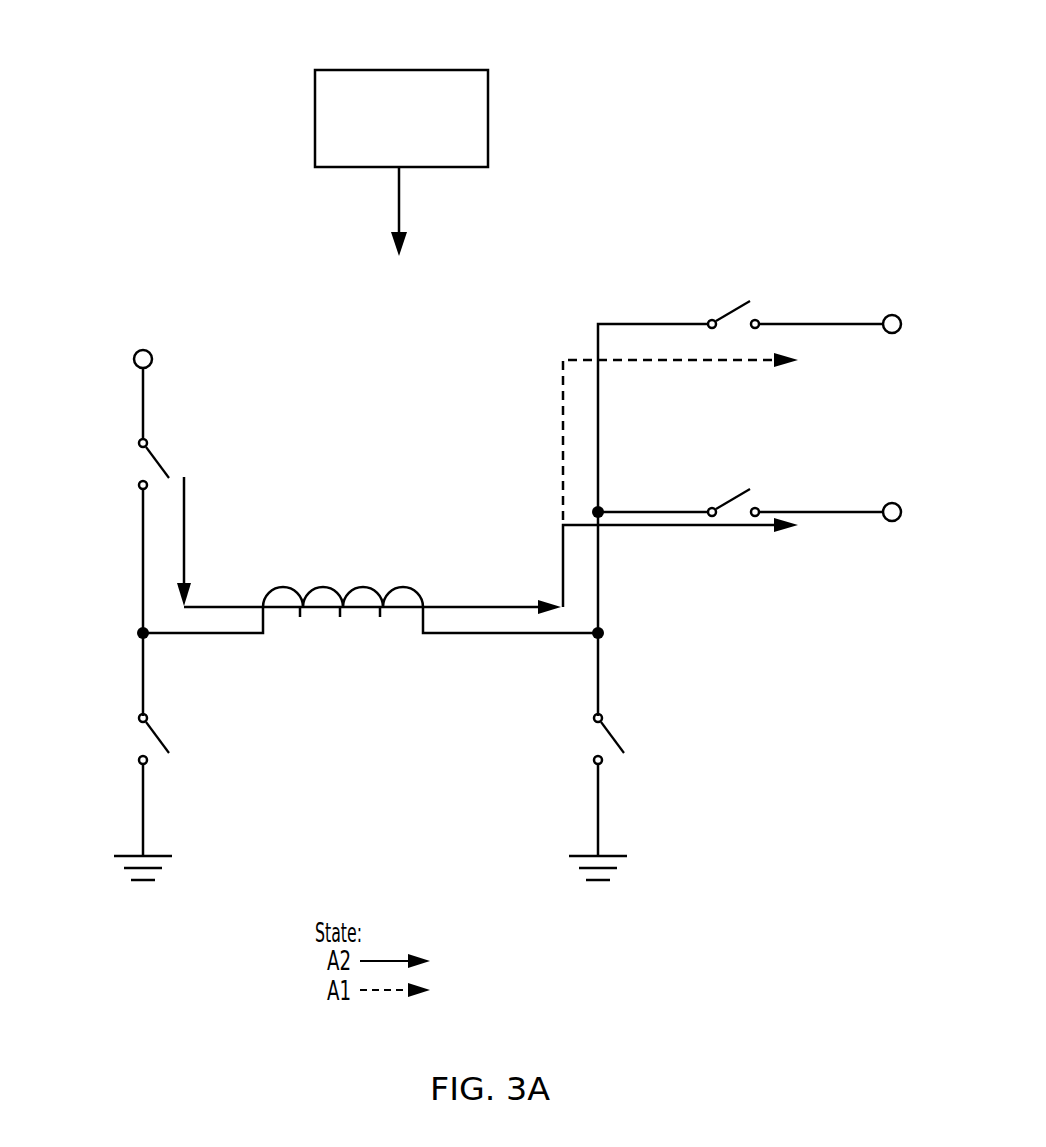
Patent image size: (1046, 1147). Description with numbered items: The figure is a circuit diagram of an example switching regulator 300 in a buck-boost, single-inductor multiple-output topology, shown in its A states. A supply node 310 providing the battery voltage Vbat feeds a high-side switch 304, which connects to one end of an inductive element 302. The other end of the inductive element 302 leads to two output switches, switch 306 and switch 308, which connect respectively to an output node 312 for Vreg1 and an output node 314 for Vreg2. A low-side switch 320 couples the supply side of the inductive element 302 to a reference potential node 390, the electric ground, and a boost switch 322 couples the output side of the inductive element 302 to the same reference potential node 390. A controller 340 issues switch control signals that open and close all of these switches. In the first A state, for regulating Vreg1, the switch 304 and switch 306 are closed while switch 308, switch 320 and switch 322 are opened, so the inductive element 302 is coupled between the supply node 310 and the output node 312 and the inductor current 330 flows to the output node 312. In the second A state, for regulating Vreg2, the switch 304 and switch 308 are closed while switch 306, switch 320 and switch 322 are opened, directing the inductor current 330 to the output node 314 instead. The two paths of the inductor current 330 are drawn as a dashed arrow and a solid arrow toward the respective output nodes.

The switching regulator 300 is at (146, 127).
The controller 340 is at (422, 68).
The supply node 310 is at (134, 357).
The switch 304 is at (153, 455).
The inductive element 302 is at (322, 587).
The inductor current 330 is at (462, 605).
The switch 306 is at (728, 313).
The switch 308 is at (728, 501).
The output node 312 is at (897, 315).
The output node 314 is at (897, 503).
The switch 320 is at (157, 732).
The switch 322 is at (610, 732).
The reference potential node 390 is at (133, 854).